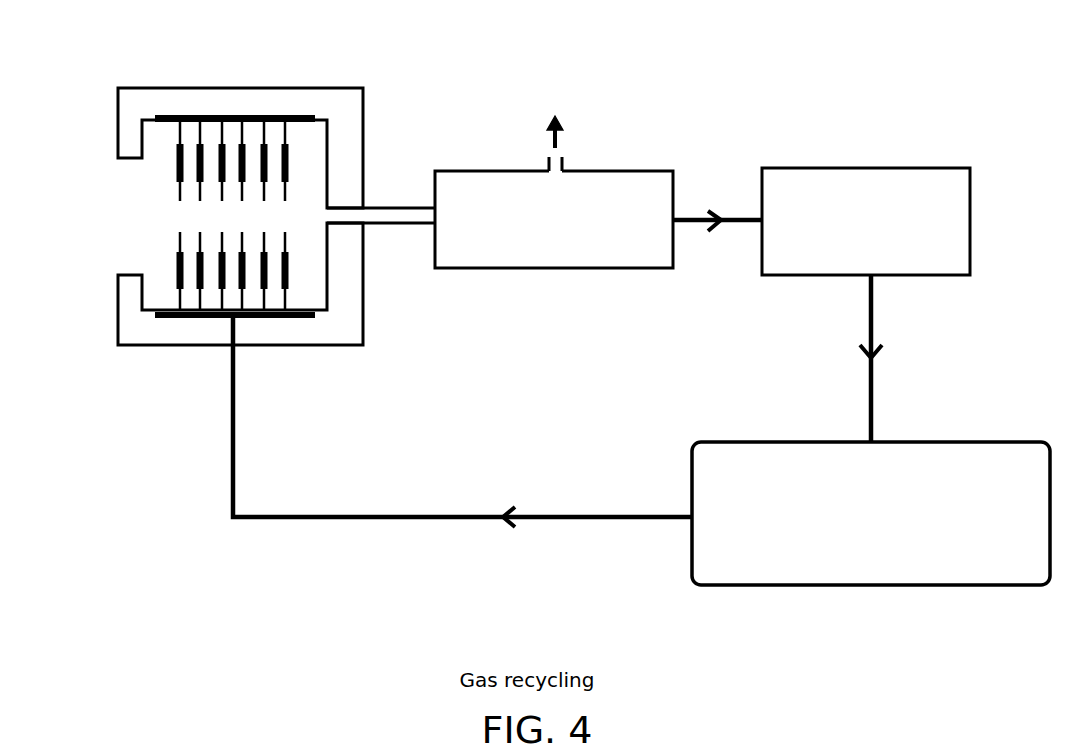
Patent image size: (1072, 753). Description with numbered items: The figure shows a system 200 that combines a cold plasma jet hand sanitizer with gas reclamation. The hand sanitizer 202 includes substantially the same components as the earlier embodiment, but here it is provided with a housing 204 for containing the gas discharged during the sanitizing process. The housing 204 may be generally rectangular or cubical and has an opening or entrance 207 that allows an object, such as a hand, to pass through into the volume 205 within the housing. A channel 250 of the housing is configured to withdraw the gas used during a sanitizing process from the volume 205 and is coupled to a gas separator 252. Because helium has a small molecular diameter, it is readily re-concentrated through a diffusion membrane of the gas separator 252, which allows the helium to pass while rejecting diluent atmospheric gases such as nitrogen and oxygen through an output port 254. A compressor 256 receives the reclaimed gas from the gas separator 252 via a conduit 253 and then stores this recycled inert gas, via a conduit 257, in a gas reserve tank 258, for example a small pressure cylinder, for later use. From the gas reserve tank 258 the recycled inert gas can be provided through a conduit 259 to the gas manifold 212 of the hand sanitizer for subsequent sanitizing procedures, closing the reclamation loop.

The system 200 is at (878, 92).
The hand sanitizer 202 is at (132, 83).
The housing 204 is at (345, 113).
The volume 205 is at (233, 216).
The entrance 207 is at (76, 216).
The gas manifold 212 is at (158, 318).
The channel 250 is at (383, 222).
The gas separator 252 is at (590, 258).
The conduit 253 is at (733, 218).
The output port 254 is at (563, 158).
The compressor 256 is at (950, 220).
The conduit 257 is at (874, 318).
The gas reserve tank 258 is at (935, 572).
The conduit 259 is at (380, 519).